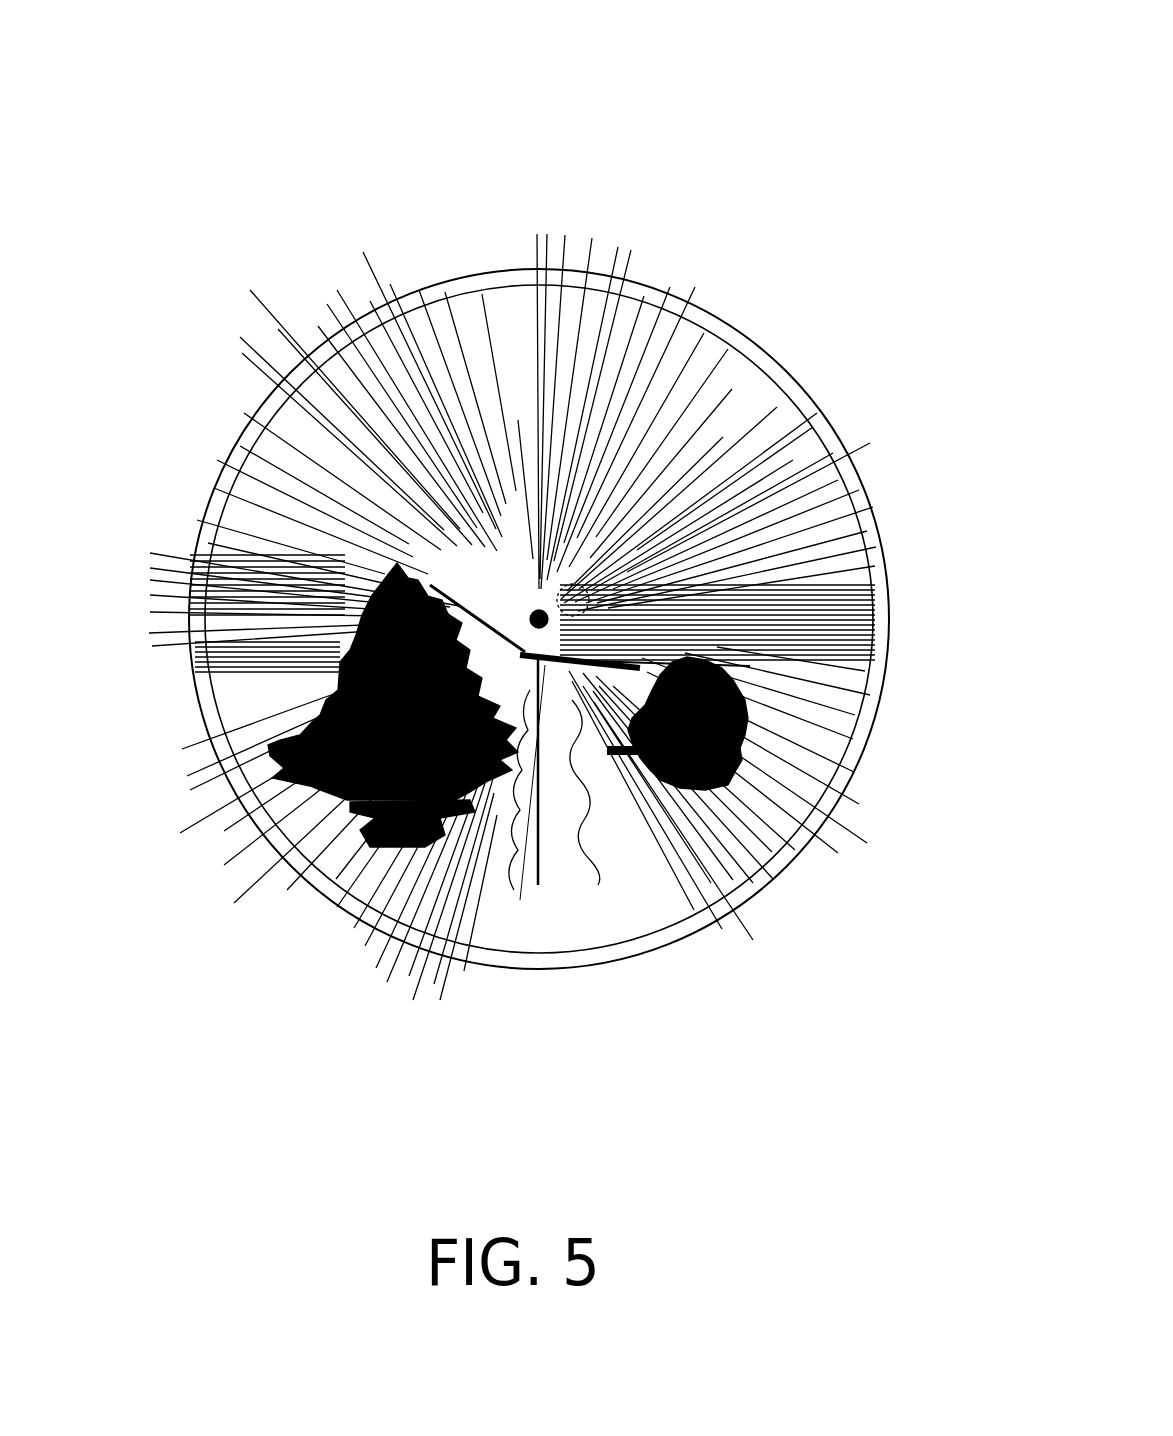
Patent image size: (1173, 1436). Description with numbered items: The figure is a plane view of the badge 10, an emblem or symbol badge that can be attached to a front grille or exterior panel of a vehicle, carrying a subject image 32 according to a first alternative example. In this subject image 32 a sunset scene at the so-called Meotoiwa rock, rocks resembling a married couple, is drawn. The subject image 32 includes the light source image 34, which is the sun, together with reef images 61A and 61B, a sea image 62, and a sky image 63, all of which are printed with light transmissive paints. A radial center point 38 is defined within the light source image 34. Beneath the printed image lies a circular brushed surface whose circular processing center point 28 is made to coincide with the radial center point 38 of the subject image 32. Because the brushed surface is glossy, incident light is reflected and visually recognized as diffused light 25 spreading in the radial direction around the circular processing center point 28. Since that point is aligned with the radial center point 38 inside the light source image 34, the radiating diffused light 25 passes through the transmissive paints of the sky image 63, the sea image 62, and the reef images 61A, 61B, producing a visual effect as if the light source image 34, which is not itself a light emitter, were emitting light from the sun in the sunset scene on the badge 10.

The badge 10 is at (775, 233).
The diffused light 25 is at (763, 833).
The circular processing center point 28 is at (535, 364).
The radial center point 38 is at (536, 609).
The subject image 32 is at (264, 458).
The light source image 34 is at (563, 595).
The reef image 61A is at (370, 663).
The reef image 61B is at (720, 695).
The sea image 62 is at (532, 914).
The sky image 63 is at (693, 397).